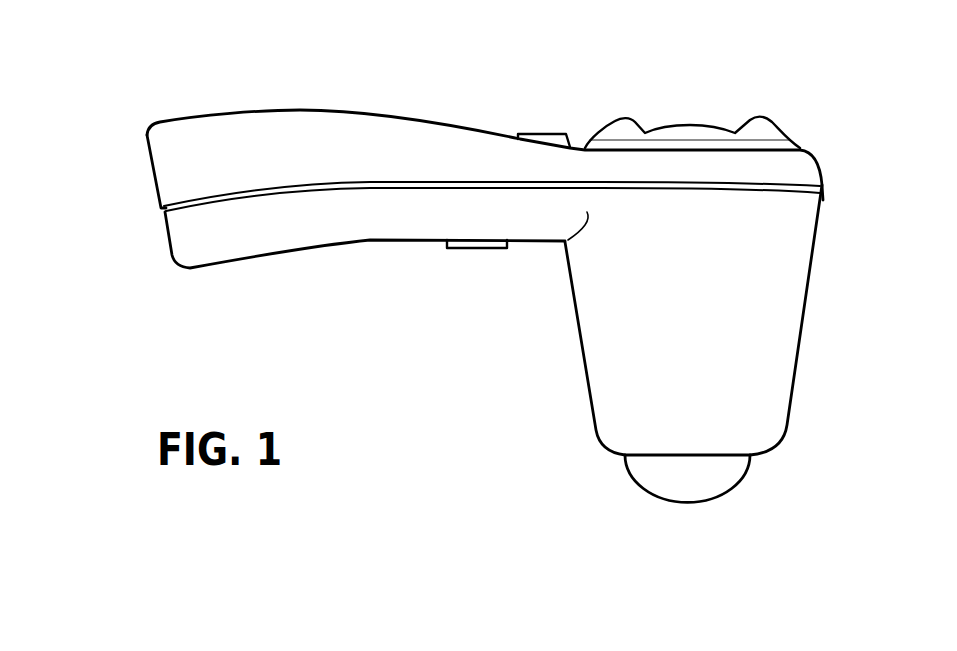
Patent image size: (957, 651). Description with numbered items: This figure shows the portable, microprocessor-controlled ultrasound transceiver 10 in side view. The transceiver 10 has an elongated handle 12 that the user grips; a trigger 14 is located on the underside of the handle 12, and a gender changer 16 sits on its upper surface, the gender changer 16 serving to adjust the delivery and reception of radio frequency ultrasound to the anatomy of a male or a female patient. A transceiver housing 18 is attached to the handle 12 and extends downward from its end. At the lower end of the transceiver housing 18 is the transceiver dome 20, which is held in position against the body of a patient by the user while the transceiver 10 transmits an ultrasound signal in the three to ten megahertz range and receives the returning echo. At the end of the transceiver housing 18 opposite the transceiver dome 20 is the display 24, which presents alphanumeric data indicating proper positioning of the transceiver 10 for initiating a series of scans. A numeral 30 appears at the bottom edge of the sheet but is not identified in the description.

The transceiver 10 is at (141, 117).
The handle 12 is at (186, 272).
The trigger 14 is at (472, 258).
The gender changer 16 is at (527, 122).
The transceiver housing 18 is at (578, 357).
The transceiver dome 20 is at (742, 485).
The display 24 is at (596, 132).
The element 30 is at (452, 641).